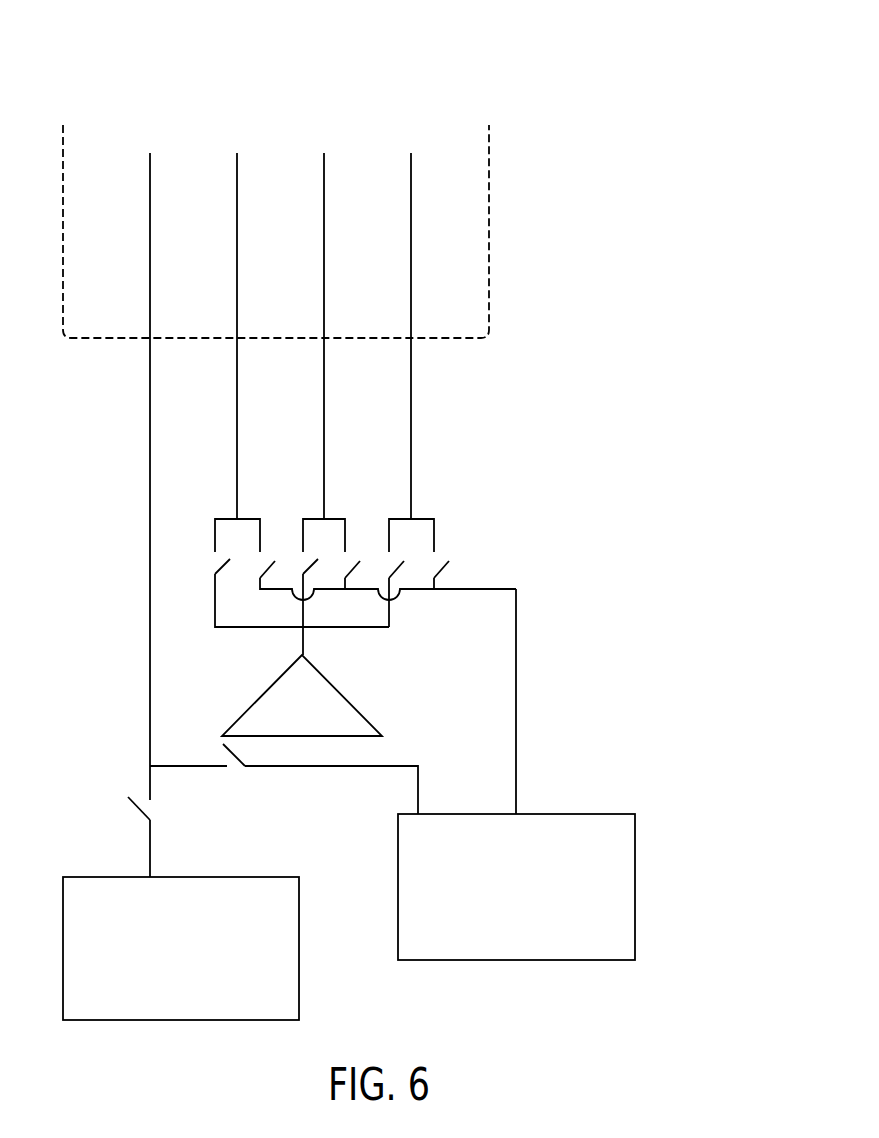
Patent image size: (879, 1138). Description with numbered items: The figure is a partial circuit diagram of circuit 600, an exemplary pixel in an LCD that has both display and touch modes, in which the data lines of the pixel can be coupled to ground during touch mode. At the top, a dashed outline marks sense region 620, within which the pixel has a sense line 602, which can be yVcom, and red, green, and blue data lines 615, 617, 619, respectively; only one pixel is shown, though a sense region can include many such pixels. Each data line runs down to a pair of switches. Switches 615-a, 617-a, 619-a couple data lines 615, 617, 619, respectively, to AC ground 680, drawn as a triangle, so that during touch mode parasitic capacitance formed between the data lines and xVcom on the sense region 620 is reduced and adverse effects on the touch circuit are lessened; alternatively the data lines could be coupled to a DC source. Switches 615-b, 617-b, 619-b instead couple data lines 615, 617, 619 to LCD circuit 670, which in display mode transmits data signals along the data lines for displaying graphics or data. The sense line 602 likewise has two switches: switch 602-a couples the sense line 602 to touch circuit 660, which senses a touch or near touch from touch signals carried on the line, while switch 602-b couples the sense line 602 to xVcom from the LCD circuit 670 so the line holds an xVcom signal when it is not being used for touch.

The circuit 600 is at (516, 88).
The sense line 602 is at (150, 173).
The red data line 615 is at (237, 173).
The green data line 617 is at (324, 173).
The blue data line 619 is at (411, 173).
The sense region 620 is at (489, 233).
The switch 615-a is at (215, 627).
The switch 615-b is at (258, 580).
The switch 617-a is at (303, 625).
The switch 617-b is at (347, 578).
The switch 619-a is at (389, 625).
The switch 619-b is at (434, 582).
The AC ground 680 is at (347, 693).
The switch 602-a is at (142, 810).
The switch 602-b is at (233, 768).
The touch circuit 660 is at (299, 945).
The LCD circuit 670 is at (635, 885).